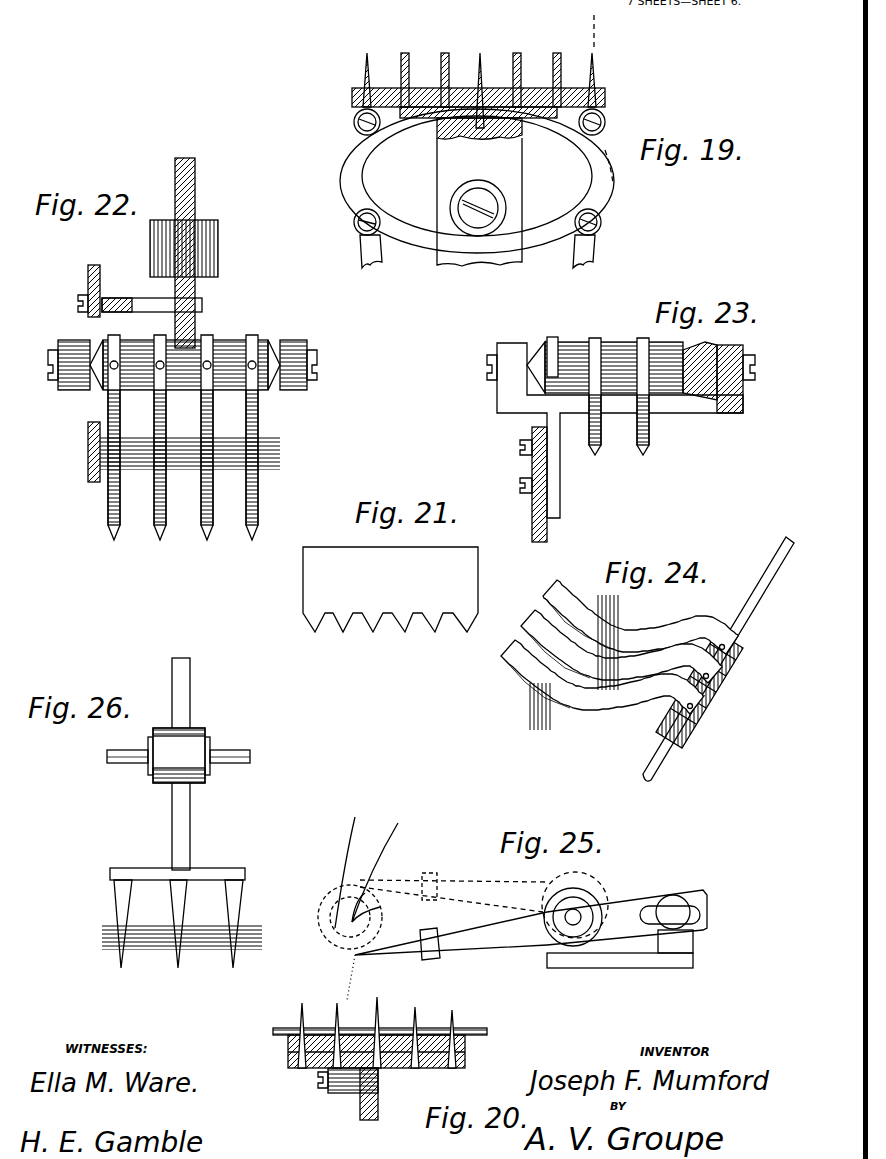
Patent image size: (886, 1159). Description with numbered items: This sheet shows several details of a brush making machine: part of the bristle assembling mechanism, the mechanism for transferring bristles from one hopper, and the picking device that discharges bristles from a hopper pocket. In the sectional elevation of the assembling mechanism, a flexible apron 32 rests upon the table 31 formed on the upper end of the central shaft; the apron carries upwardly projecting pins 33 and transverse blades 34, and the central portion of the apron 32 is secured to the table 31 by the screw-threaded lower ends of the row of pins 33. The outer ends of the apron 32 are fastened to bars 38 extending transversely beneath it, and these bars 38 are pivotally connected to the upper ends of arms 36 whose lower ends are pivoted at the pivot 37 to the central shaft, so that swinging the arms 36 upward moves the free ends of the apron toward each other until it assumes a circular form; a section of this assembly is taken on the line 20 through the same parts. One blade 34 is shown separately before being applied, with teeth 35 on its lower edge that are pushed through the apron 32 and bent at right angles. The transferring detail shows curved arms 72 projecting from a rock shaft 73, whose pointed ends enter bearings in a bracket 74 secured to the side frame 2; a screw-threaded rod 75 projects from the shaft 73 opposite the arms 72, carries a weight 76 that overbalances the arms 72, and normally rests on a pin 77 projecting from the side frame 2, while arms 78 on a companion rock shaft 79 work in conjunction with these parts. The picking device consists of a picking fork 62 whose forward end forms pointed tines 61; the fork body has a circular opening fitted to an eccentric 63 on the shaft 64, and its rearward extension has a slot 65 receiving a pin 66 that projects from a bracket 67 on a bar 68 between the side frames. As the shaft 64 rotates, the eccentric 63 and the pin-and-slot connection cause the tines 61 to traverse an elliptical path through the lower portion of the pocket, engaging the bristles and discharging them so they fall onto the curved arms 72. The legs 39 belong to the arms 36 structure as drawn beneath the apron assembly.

In FIG. 22, the side frame 2 is at (86, 277).
In FIG. 23, the side frame 2 is at (528, 466).
In FIG. 19, the spring tooth cultivator attachment 20 is at (634, 176).
In FIG. 19, the table 31 is at (546, 120).
In FIG. 19, the flexible apron 32 is at (530, 92).
In FIG. 20, the flexible apron 32 is at (288, 1045).
In FIG. 19, the pins 33 is at (364, 68).
In FIG. 20, the pins 33 is at (452, 1010).
In FIG. 19, the blades 34 is at (444, 53).
In FIG. 21, the blades 34 is at (337, 560).
In FIG. 21, the teeth 35 is at (343, 632).
In FIG. 19, the arms 36 is at (348, 184).
In FIG. 20, the arms 36 is at (378, 1100).
In FIG. 19, the pivot 37 is at (474, 226).
In FIG. 19, the bars 38 is at (355, 110).
In FIG. 20, the bars 38 is at (466, 1062).
In FIG. 19, the legs 39 is at (370, 266).
In FIG. 26, the pointed tines 61 is at (120, 912).
In FIG. 25, the pointed tines 61 is at (418, 948).
In FIG. 26, the picking fork 62 is at (192, 818).
In FIG. 25, the picking fork 62 is at (470, 888).
In FIG. 26, the eccentric 63 is at (208, 738).
In FIG. 25, the eccentric 63 is at (570, 945).
In FIG. 26, the shaft 64 is at (132, 764).
In FIG. 25, the shaft 64 is at (580, 910).
In FIG. 25, the slot 65 is at (655, 905).
In FIG. 25, the pin 66 is at (692, 912).
In FIG. 25, the bracket 67 is at (690, 945).
In FIG. 25, the bar 68 is at (676, 968).
In FIG. 22, the curved arms 72 is at (258, 430).
In FIG. 23, the curved arms 72 is at (636, 468).
In FIG. 22, the rock shaft 73 is at (232, 355).
In FIG. 23, the rock shaft 73 is at (618, 355).
In FIG. 23, the bracket 74 is at (500, 402).
In FIG. 22, the screw-threaded rod 75 is at (196, 192).
In FIG. 22, the weight 76 is at (219, 256).
In FIG. 22, the pin 77 is at (136, 298).
In FIG. 24, the arms 78 is at (518, 645).
In FIG. 24, the rock shaft 79 is at (732, 616).